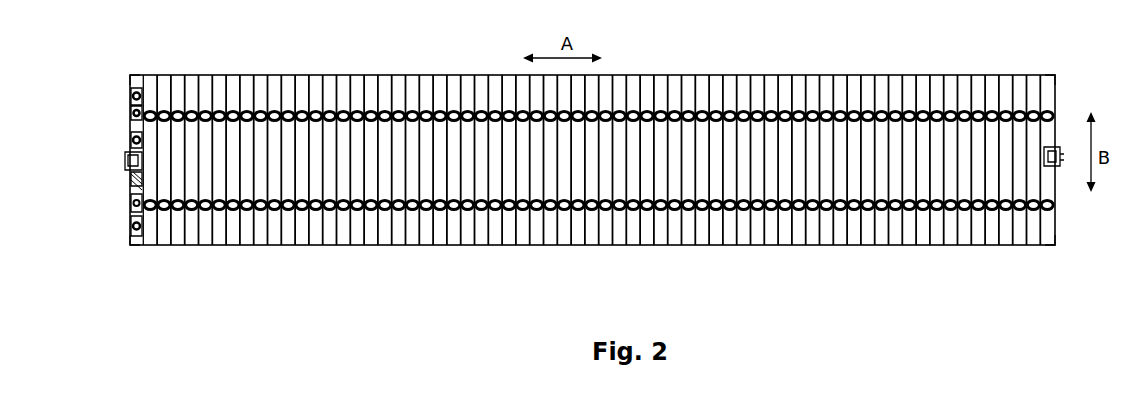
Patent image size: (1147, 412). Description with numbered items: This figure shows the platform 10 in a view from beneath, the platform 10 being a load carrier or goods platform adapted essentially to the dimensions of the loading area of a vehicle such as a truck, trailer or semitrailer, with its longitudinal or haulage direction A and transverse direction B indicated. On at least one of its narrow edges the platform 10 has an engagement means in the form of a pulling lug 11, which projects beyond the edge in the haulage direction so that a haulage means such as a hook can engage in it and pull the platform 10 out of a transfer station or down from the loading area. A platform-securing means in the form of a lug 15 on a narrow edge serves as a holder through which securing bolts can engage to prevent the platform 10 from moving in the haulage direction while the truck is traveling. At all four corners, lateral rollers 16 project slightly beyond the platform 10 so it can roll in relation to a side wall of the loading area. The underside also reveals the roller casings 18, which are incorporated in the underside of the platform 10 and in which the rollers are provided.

The platform 10 is at (637, 218).
The pulling lug 11 is at (142, 178).
The platform-securing lug 15 is at (142, 137).
The lateral rollers 16 is at (130, 77).
The roller casings 18 is at (935, 210).